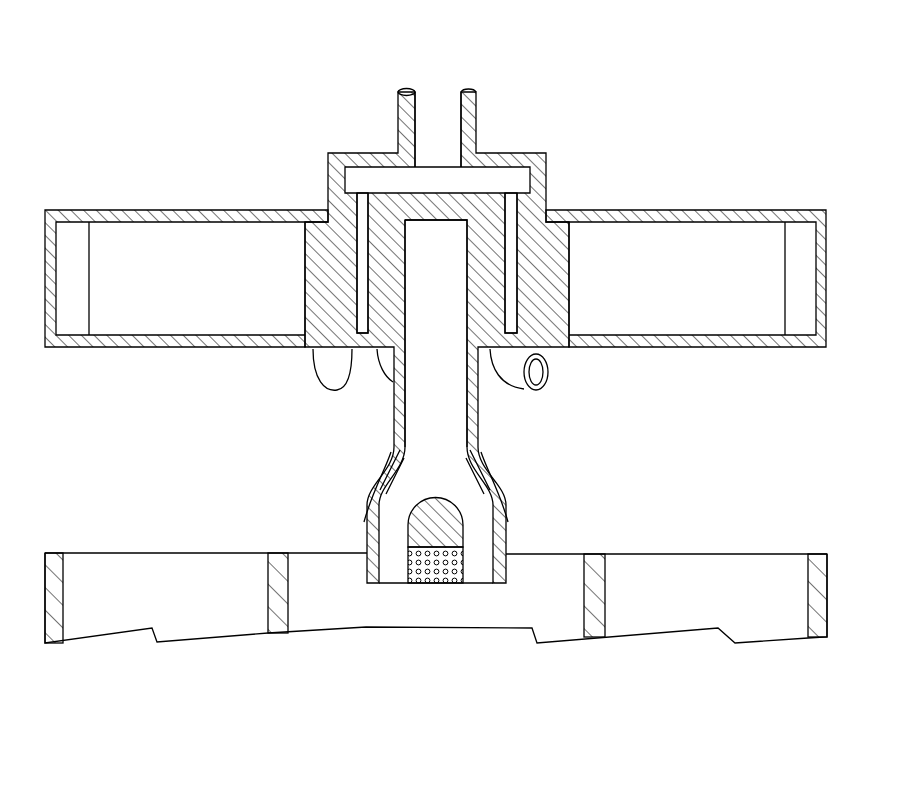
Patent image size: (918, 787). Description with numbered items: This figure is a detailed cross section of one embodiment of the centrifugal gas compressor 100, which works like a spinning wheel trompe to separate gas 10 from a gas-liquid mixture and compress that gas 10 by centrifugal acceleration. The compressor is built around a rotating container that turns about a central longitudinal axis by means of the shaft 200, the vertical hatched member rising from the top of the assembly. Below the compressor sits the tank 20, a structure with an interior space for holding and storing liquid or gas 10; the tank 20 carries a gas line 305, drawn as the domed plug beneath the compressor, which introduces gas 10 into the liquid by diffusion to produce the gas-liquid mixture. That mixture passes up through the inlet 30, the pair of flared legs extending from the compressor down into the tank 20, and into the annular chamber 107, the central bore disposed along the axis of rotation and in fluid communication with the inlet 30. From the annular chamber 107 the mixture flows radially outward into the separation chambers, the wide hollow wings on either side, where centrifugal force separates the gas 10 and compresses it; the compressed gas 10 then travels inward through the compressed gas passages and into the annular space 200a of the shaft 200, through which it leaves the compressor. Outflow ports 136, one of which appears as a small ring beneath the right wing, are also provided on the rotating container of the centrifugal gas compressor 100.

The gas 10 is at (436, 365).
The centrifugal gas compressor 100 is at (645, 131).
The shaft 200 is at (386, 111).
The annular space 200a is at (445, 123).
The annular chamber 107 is at (447, 312).
The outflow ports 136 is at (548, 391).
The inlet 30 is at (384, 484).
The tank 20 is at (98, 553).
The gas line 305 is at (462, 596).